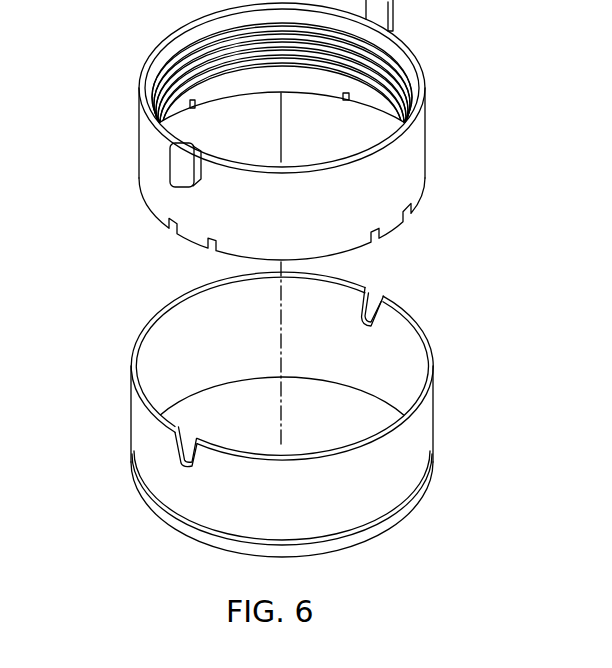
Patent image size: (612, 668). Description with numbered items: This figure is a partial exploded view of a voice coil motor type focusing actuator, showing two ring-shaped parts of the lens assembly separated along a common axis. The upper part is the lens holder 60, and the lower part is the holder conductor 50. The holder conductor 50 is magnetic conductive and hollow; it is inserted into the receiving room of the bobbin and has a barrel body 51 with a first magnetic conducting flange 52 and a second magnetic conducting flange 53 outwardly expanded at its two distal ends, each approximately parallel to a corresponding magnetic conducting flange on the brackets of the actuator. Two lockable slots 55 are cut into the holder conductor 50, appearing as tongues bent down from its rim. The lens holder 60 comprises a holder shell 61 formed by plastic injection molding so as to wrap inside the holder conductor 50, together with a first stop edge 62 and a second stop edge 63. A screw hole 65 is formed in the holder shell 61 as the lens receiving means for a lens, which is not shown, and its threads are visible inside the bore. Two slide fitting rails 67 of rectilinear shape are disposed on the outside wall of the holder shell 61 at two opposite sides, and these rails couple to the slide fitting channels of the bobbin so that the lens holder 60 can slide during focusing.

The holder conductor 50 is at (131, 392).
The barrel body 51 is at (418, 435).
The first magnetic conducting flange 52 is at (410, 510).
The second magnetic conducting flange 53 is at (433, 345).
The lockable slots 55 is at (180, 460).
The lens holder 60 is at (150, 213).
The holder shell 61 is at (416, 148).
The first stop edge 62 is at (419, 203).
The second stop edge 63 is at (421, 70).
The screw hole 65 is at (183, 68).
The slide fitting rails 67 is at (178, 158).